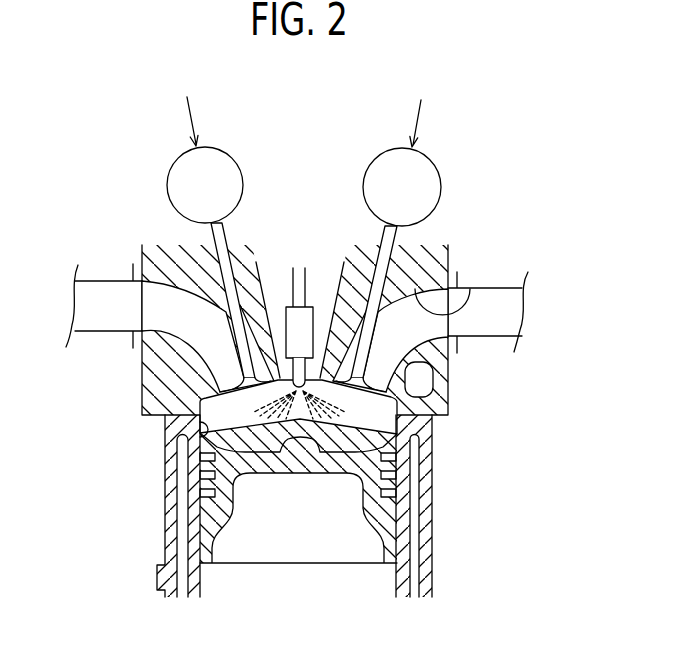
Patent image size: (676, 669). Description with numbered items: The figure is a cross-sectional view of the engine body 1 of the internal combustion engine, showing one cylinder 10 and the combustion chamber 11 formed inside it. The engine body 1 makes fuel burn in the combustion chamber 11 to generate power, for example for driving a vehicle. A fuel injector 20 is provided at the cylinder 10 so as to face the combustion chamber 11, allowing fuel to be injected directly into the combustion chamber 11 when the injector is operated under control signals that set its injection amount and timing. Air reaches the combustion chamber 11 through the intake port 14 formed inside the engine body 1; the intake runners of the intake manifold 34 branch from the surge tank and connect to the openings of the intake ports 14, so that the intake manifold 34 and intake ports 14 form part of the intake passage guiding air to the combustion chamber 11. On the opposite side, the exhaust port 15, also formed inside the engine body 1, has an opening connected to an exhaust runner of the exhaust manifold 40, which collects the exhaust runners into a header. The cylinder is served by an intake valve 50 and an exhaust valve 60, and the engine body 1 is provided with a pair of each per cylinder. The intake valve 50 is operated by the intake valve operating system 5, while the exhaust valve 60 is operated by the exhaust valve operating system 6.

The engine body 1 is at (166, 521).
The intake valve operating system 5 is at (217, 148).
The exhaust valve operating system 6 is at (435, 165).
The cylinder 10 is at (212, 430).
The combustion chamber 11 is at (363, 407).
The intake port 14 is at (170, 280).
The exhaust port 15 is at (473, 300).
The fuel injector 20 is at (303, 328).
The intake manifold 34 is at (100, 332).
The exhaust manifold 40 is at (483, 339).
The intake valve 50 is at (226, 281).
The exhaust valve 60 is at (378, 248).